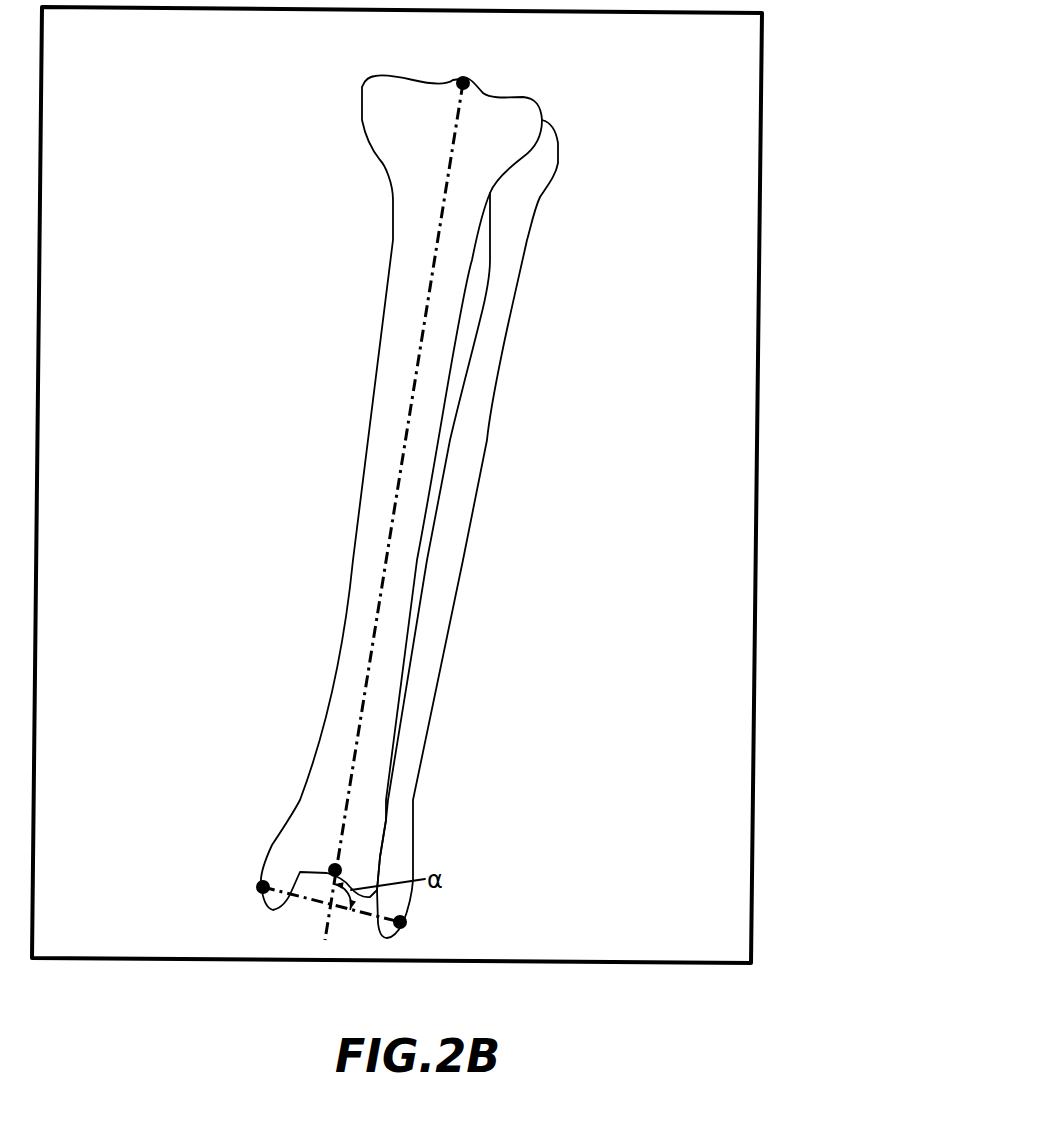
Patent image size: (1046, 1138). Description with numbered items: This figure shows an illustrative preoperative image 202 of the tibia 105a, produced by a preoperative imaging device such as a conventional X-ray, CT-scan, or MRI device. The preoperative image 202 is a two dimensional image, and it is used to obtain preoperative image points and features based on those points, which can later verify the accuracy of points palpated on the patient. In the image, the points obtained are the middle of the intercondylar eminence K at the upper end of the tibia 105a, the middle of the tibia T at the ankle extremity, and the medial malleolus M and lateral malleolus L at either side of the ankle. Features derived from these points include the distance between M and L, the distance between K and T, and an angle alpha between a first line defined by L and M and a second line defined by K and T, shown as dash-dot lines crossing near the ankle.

The tibia 105a is at (386, 174).
The preoperative image 202 is at (762, 230).
The middle of the intercondylar eminence K is at (335, 58).
The medial malleolus M is at (252, 872).
The middle of the tibia T is at (352, 863).
The lateral malleolus L is at (417, 917).